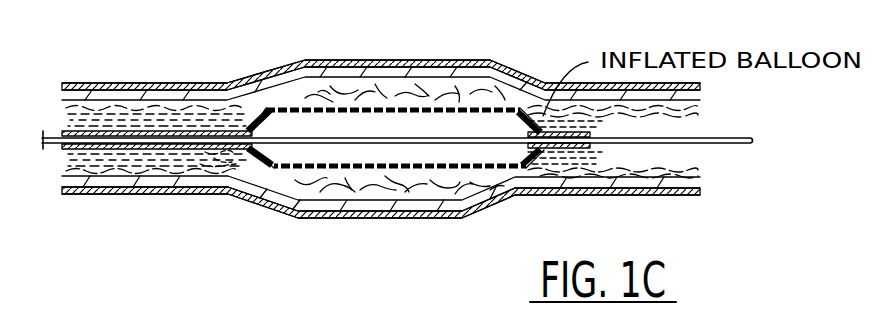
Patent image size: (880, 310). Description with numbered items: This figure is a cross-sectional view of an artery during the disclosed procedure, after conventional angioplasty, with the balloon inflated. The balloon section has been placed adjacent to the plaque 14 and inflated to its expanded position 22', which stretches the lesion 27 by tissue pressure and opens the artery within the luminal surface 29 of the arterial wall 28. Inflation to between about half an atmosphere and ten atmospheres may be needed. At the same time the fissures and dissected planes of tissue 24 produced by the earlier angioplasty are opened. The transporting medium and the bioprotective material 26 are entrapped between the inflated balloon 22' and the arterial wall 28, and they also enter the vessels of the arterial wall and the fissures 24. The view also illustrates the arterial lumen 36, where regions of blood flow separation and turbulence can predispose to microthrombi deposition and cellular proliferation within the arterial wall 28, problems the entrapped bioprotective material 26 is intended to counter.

The plaque 14 is at (493, 86).
The inflated balloon position 22' is at (397, 84).
The fissures and dissected planes of tissue 24 is at (452, 70).
The bioprotective material 26 is at (168, 173).
The lesion 27 is at (296, 105).
The arterial wall 28 is at (527, 168).
The luminal surface 29 is at (288, 173).
The arterial lumen 36 is at (236, 162).